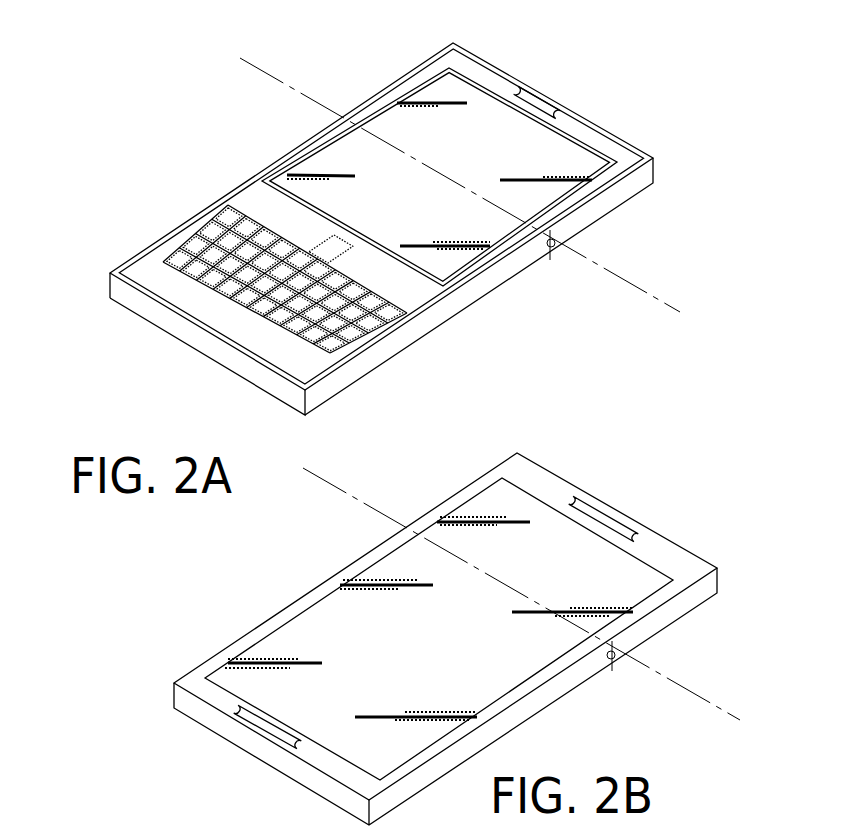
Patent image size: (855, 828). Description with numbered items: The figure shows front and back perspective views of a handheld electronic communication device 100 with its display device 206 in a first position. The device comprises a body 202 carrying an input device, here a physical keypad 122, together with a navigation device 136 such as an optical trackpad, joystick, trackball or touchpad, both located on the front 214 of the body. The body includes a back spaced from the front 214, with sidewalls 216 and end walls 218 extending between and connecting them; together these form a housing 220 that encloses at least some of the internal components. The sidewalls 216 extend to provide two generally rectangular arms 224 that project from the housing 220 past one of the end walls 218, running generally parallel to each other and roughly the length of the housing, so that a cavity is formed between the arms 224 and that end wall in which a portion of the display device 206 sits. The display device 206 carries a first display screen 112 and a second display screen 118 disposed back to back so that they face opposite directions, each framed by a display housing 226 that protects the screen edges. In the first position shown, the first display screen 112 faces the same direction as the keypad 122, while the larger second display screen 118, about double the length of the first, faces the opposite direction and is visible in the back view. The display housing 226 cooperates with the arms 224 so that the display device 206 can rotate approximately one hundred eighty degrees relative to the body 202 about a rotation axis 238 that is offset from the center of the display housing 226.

In FIG. 2A, the handheld electronic communication device 100 is at (707, 162).
In FIG. 2B, the handheld electronic communication device 100 is at (737, 546).
In FIG. 2A, the first display screen 112 is at (293, 175).
In FIG. 2B, the second display screen 118 is at (320, 617).
In FIG. 2A, the keypad 122 is at (200, 235).
In FIG. 2A, the navigation device 136 is at (335, 255).
In FIG. 2A, the body 202 is at (138, 262).
In FIG. 2A, the display device 206 is at (485, 60).
In FIG. 2A, the front 214 is at (148, 303).
In FIG. 2A, the sidewalls 216 is at (235, 188).
In FIG. 2A, the end walls 218 is at (218, 353).
In FIG. 2A, the housing 220 is at (372, 373).
In FIG. 2A, the arms 224 is at (408, 73).
In FIG. 2A, the display housing 226 is at (575, 118).
In FIG. 2A, the rotation axis 238 is at (472, 201).
In FIG. 2B, the rotation axis 238 is at (536, 608).